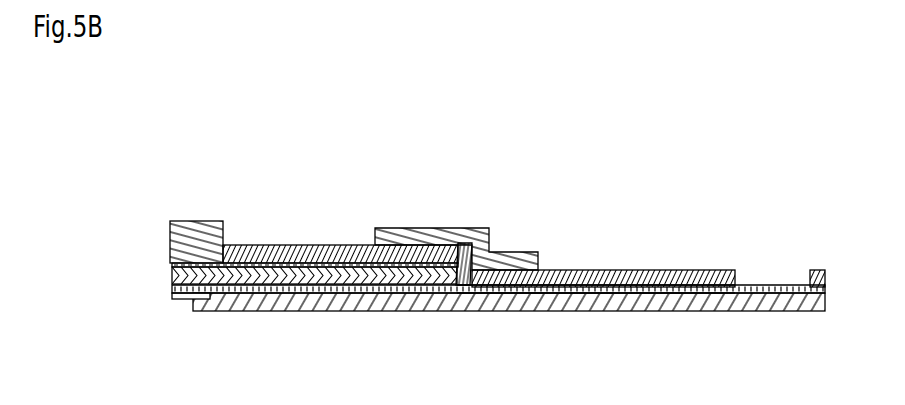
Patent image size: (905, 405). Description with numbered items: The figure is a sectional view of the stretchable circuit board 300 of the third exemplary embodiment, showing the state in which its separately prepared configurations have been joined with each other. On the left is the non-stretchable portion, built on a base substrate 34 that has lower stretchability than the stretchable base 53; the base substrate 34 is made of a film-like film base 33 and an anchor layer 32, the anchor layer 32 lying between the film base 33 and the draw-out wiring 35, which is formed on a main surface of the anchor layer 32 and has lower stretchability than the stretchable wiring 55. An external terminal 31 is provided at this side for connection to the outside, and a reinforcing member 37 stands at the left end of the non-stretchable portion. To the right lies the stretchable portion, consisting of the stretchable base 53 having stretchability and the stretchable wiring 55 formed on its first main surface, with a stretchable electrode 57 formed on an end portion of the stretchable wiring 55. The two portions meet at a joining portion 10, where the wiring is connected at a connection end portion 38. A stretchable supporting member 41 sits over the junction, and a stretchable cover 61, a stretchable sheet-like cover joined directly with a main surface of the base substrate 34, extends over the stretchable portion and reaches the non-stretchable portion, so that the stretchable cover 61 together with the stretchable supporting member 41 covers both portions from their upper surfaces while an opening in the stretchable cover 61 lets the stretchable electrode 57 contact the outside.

The stretchable circuit board 300 is at (514, 114).
The joining portion 10 is at (434, 295).
The connection end portion 38 is at (596, 289).
The external terminal 31 is at (185, 299).
The anchor layer 32 is at (266, 251).
The film base 33 is at (306, 265).
The base substrate 34 is at (248, 200).
The draw-out wiring 35 is at (238, 297).
The reinforcing member 37 is at (207, 221).
The stretchable supporting member 41 is at (433, 228).
The stretchable base 53 is at (287, 311).
The stretchable wiring 55 is at (571, 270).
The stretchable electrode 57 is at (777, 290).
The stretchable cover 61 is at (712, 268).